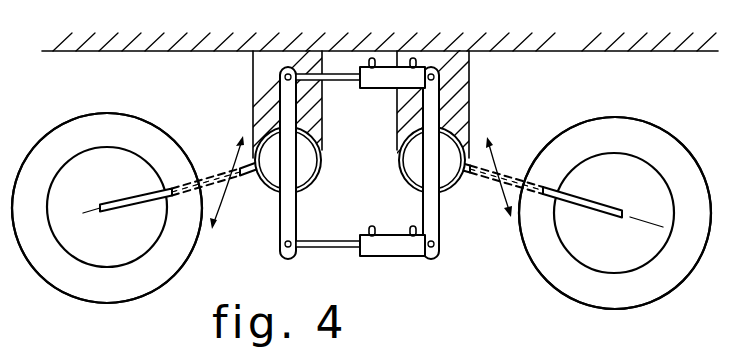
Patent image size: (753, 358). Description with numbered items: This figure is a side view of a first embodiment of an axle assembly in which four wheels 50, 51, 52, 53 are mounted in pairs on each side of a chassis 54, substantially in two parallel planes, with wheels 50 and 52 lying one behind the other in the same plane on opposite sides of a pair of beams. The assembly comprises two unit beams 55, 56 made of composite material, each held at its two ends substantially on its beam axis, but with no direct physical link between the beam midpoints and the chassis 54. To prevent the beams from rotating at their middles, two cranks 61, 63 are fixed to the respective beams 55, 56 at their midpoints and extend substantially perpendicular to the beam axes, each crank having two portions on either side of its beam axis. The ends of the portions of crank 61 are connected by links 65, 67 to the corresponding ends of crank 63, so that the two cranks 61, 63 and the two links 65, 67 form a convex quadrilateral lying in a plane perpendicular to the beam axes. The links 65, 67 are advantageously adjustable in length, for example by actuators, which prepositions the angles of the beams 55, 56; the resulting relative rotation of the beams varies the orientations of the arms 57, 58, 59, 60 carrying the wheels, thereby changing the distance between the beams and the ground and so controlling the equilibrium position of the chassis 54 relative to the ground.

The wheel 50 is at (68, 277).
The wheel 51 is at (107, 230).
The wheel 52 is at (652, 287).
The wheel 53 is at (630, 232).
The chassis 54 is at (528, 49).
The unit beam 55 is at (298, 133).
The unit beam 56 is at (413, 171).
The arm 57 is at (203, 165).
The arm 58 is at (206, 154).
The arm 59 is at (484, 190).
The arm 60 is at (506, 220).
The crank 61 is at (280, 226).
The crank 63 is at (450, 107).
The link 65 is at (375, 252).
The link 67 is at (383, 66).